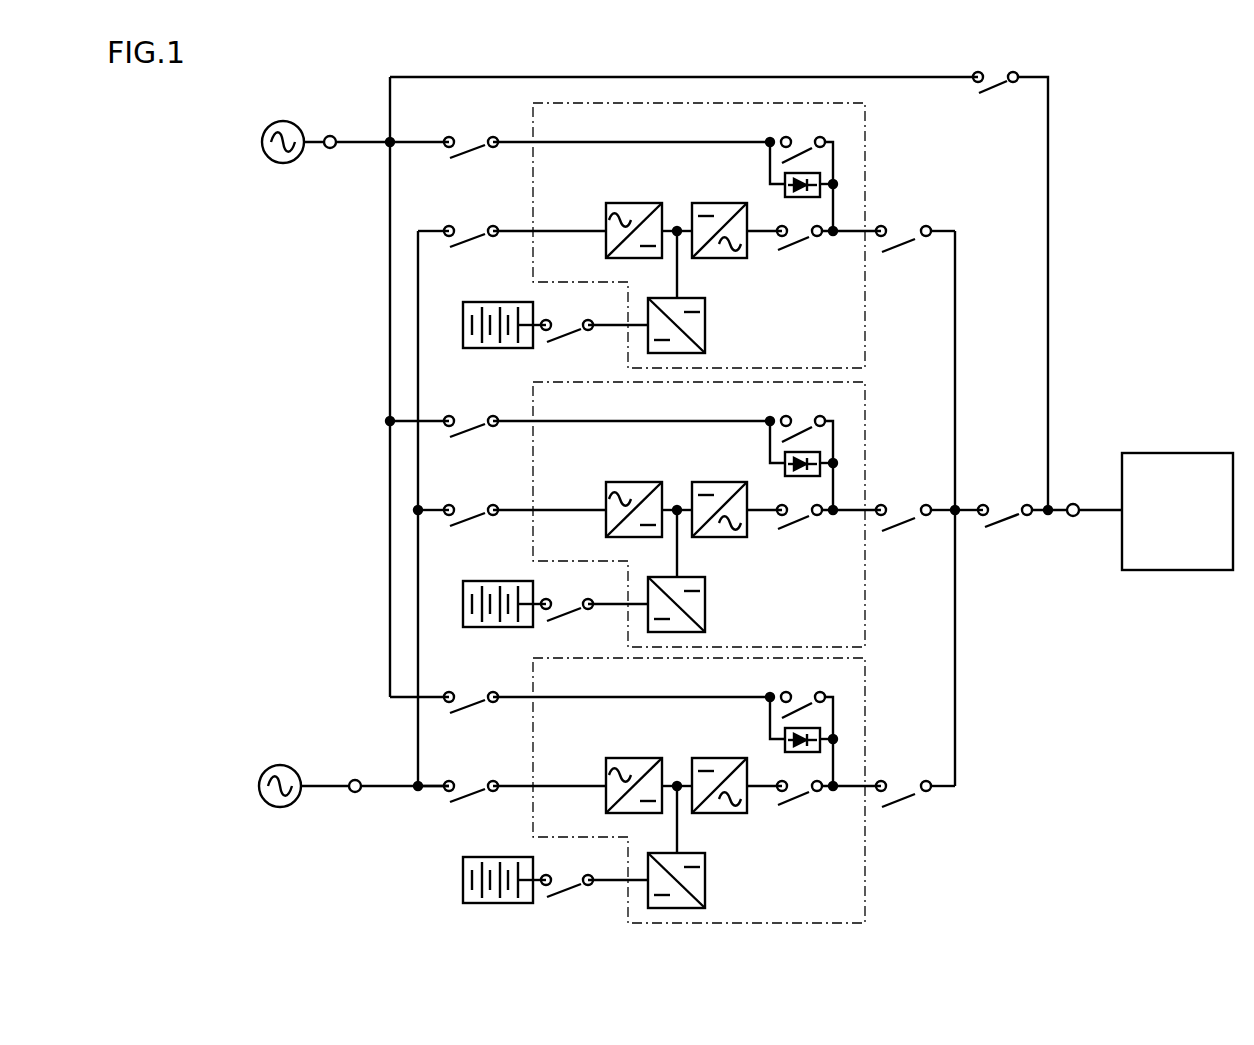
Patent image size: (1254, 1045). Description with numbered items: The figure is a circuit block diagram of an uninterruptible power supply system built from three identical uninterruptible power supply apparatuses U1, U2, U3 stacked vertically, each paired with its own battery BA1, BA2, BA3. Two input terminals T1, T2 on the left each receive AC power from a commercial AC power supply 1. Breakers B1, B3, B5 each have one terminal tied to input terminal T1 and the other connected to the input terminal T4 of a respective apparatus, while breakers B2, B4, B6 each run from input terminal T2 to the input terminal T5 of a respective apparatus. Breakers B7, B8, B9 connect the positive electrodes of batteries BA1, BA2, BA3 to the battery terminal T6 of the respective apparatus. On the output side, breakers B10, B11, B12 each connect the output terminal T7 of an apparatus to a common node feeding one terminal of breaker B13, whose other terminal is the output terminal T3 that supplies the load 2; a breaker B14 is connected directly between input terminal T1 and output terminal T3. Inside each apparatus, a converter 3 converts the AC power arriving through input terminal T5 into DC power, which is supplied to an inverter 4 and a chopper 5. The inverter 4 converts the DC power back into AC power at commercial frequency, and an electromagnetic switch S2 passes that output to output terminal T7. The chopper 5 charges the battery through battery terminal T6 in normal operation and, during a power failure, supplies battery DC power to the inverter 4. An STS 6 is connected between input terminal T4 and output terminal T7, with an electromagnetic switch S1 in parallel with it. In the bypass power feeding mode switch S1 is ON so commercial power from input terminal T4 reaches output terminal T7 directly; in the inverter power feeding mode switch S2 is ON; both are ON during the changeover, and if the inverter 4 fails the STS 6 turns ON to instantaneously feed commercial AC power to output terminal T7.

The commercial AC power supply 1 is at (283, 165).
The load 2 is at (1172, 462).
The converter 3 is at (640, 207).
The inverter 4 is at (723, 207).
The chopper 5 is at (705, 325).
The STS 6 is at (790, 198).
The input terminal T1 is at (330, 150).
The input terminal T2 is at (355, 794).
The output terminal T3 is at (1073, 518).
The input terminal T4 is at (533, 143).
The input terminal T5 is at (533, 231).
The battery terminal T6 is at (620, 332).
The output terminal T7 is at (864, 238).
The breaker B1 is at (470, 154).
The breaker B2 is at (467, 234).
The breaker B3 is at (444, 441).
The breaker B4 is at (467, 502).
The breaker B5 is at (444, 717).
The breaker B6 is at (467, 778).
The breaker B7 is at (566, 335).
The breaker B8 is at (567, 626).
The breaker B9 is at (567, 902).
The breaker B10 is at (900, 243).
The breaker B11 is at (918, 536).
The breaker B12 is at (918, 812).
The breaker B13 is at (1002, 522).
The breaker B14 is at (991, 86).
The electromagnetic switch S1 is at (788, 154).
The electromagnetic switch S2 is at (797, 237).
The battery BA1 is at (488, 348).
The battery BA2 is at (483, 616).
The battery BA3 is at (483, 892).
The uninterruptible power supply apparatus U1 is at (532, 103).
The uninterruptible power supply apparatus U2 is at (675, 504).
The uninterruptible power supply apparatus U3 is at (675, 780).